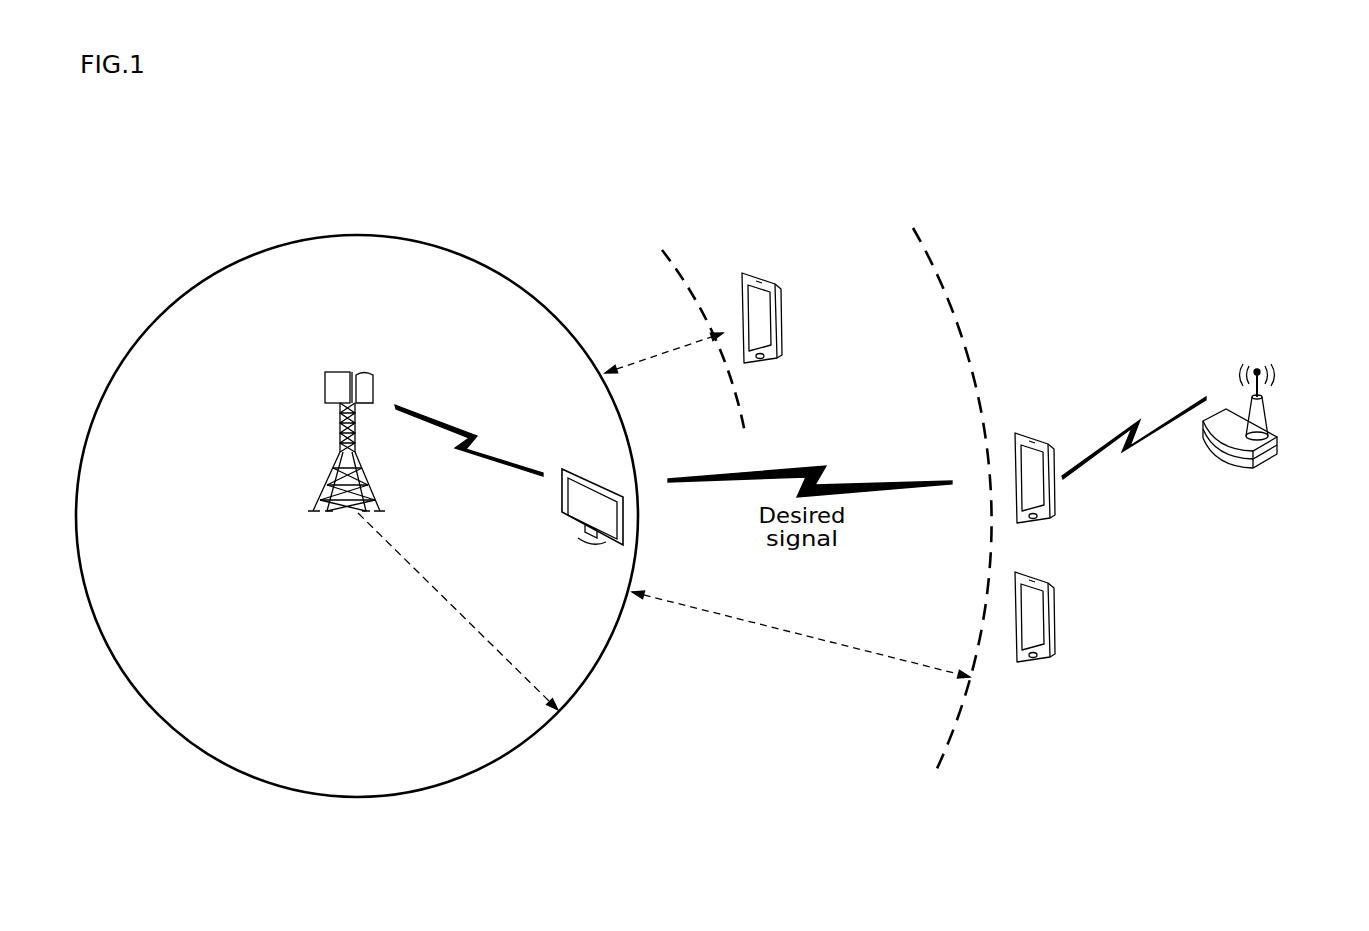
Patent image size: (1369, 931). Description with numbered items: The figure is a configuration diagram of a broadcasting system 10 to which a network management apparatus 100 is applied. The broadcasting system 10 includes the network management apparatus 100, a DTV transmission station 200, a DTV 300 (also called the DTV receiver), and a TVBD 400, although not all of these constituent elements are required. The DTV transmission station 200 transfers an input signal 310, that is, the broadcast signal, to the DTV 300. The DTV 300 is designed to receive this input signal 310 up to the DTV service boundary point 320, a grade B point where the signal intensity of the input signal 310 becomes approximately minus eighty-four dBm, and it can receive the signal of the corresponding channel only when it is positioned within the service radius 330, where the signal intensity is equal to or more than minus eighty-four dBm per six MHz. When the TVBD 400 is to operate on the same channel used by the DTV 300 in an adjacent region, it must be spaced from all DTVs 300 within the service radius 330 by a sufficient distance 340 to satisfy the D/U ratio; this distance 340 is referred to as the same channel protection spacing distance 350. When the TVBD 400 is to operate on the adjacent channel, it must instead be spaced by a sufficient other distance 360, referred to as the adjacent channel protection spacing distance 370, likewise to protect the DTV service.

The broadcasting system 10 is at (1125, 250).
The network management apparatus 100 is at (1053, 622).
The DTV transmission station 200 is at (325, 401).
The DTV 300 is at (560, 512).
The input signal 310 is at (440, 418).
The DTV service boundary point (grade B) 320 is at (423, 240).
The service radius 330 is at (493, 648).
The distance 340 is at (937, 272).
The same channel protection spacing distance 350 is at (800, 632).
The other distance 360 is at (682, 262).
The adjacent channel protection spacing distance 370 is at (657, 352).
The TVBD 400 is at (765, 278).